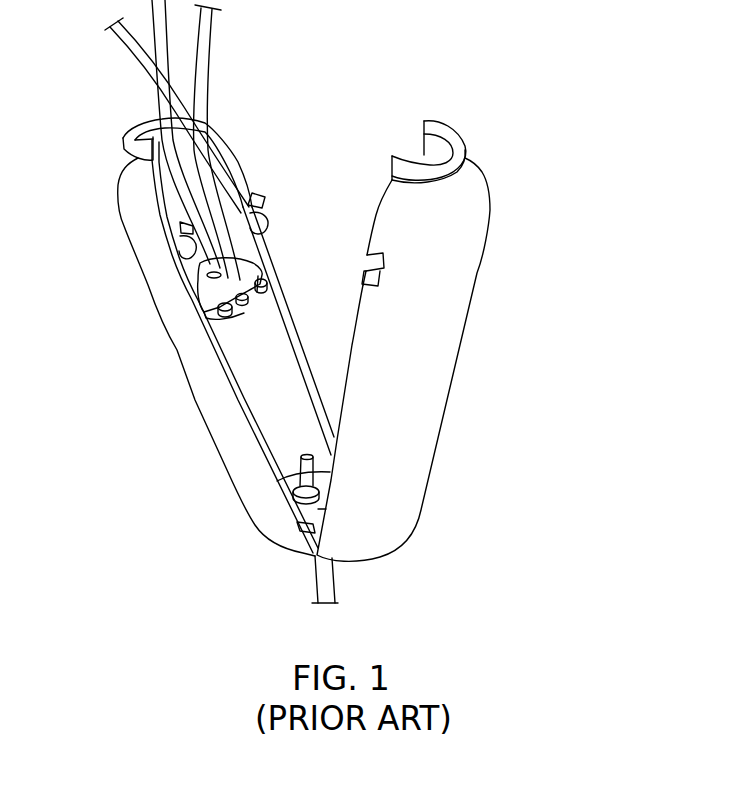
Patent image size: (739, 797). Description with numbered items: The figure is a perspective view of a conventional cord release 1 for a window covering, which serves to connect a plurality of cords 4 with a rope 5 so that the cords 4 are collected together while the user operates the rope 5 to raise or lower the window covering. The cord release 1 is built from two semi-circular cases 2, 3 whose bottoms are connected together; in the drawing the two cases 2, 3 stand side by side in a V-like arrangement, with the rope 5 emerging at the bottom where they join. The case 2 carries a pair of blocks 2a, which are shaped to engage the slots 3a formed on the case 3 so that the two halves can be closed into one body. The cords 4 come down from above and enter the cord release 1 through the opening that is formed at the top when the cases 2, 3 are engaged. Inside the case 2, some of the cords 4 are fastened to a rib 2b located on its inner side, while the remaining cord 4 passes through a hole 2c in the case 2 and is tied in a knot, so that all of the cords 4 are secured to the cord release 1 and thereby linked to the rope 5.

The cord release 1 is at (600, 107).
The case 2 is at (198, 391).
The blocks 2a is at (265, 193).
The rib 2b is at (230, 287).
The hole 2c is at (230, 316).
The case 3 is at (420, 437).
The slots 3a is at (383, 267).
The cords 4 is at (134, 55).
The rope 5 is at (317, 572).